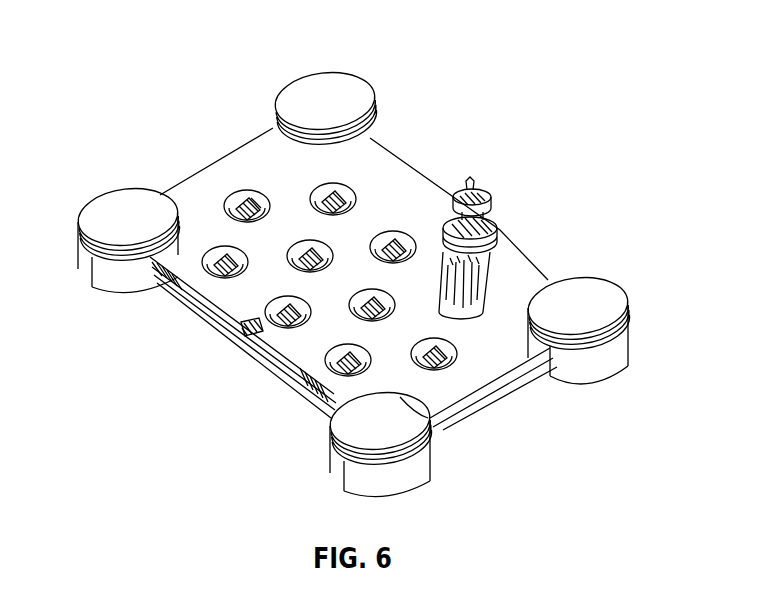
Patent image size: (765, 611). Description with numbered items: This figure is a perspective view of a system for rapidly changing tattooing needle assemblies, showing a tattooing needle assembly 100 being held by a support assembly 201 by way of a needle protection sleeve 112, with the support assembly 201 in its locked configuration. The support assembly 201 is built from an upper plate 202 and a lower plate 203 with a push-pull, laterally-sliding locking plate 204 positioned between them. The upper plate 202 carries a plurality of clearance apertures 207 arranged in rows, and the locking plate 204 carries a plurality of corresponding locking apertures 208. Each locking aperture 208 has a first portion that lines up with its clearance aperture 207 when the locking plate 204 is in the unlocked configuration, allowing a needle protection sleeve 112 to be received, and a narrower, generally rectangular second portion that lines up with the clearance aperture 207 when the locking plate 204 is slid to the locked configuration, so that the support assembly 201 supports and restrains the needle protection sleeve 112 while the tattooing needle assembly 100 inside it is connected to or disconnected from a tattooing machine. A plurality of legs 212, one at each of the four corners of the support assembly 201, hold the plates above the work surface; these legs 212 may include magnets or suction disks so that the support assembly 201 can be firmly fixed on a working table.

The tattooing needle assembly 100 is at (513, 225).
The needle protection sleeve 112 is at (488, 235).
The support assembly 201 is at (517, 278).
The upper plate 202 is at (201, 377).
The lower plate 203 is at (312, 415).
The locking plate 204 is at (256, 352).
The clearance aperture 207 is at (298, 156).
The locking aperture 208 is at (262, 205).
The leg 212 is at (330, 95).